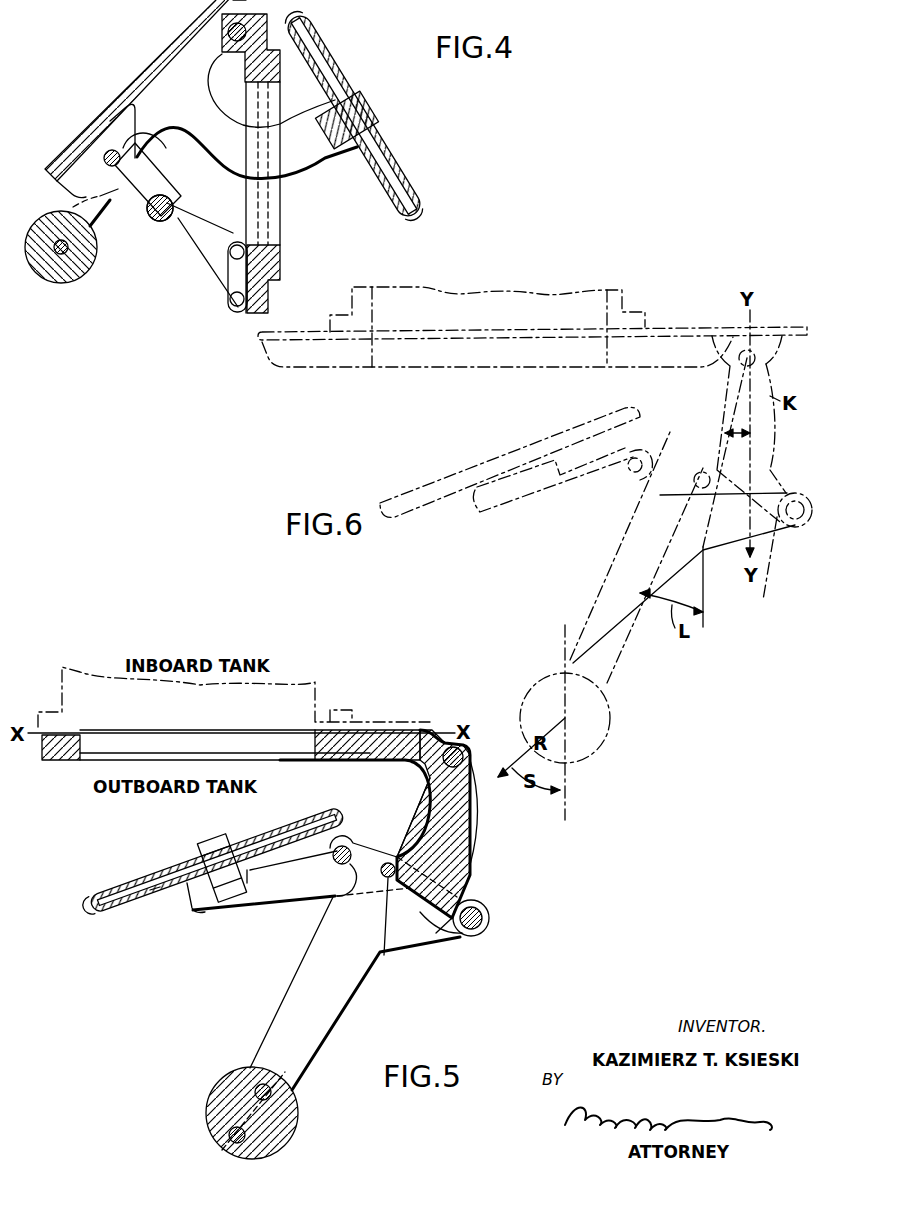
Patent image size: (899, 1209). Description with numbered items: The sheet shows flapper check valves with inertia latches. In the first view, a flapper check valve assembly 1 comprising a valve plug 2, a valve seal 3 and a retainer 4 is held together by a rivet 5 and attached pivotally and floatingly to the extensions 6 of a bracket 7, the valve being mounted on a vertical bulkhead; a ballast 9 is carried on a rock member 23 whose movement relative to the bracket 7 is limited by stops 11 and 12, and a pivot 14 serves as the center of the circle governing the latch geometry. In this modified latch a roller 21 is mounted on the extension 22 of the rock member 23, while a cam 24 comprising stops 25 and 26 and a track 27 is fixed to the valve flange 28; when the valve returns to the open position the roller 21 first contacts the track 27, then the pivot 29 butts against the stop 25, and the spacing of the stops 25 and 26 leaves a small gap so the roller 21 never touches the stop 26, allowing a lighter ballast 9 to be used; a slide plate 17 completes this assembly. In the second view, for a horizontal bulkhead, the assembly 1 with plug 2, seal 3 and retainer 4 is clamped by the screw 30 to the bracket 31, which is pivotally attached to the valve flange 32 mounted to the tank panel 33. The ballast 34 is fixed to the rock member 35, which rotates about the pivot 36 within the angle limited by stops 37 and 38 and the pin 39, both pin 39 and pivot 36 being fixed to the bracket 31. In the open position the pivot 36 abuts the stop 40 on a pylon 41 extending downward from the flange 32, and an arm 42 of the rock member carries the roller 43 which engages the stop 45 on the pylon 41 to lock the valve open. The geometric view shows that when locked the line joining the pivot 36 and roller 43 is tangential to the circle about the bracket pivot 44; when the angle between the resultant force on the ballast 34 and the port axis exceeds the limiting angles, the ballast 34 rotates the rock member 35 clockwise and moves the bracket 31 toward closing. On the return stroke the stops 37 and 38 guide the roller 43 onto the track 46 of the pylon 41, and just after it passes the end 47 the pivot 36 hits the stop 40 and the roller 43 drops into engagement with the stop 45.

In FIG. 4, the flapper check valve assembly 1 is at (402, 153).
In FIG. 6, the flapper check valve assembly 1 is at (450, 473).
In FIG. 5, the flapper check valve assembly 1 is at (168, 895).
In FIG. 4, the valve plug 2 is at (329, 67).
In FIG. 5, the valve plug 2 is at (136, 905).
In FIG. 4, the valve seal 3 is at (300, 20).
In FIG. 5, the valve seal 3 is at (93, 897).
In FIG. 4, the retainer 4 is at (382, 185).
In FIG. 5, the retainer 4 is at (153, 893).
In FIG. 4, the rivet 5 is at (367, 110).
In FIG. 4, the extensions 6 is at (310, 153).
In FIG. 4, the bracket 7 is at (172, 70).
In FIG. 4, the ballast 9 is at (62, 256).
In FIG. 4, the stop 11 is at (118, 100).
In FIG. 4, the stop 12 is at (71, 158).
In FIG. 4, the pivot 14 is at (230, 26).
In FIG. 4, the slide plate 17 is at (273, 222).
In FIG. 4, the roller 21 is at (160, 222).
In FIG. 4, the extension 22 is at (140, 210).
In FIG. 4, the rock member 23 is at (73, 207).
In FIG. 4, the cam 24 is at (210, 247).
In FIG. 4, the stop 25 is at (150, 140).
In FIG. 4, the stop 26 is at (163, 200).
In FIG. 4, the track 27 is at (128, 192).
In FIG. 4, the valve flange 28 is at (273, 268).
In FIG. 4, the pivot 29 is at (109, 152).
In FIG. 5, the screw 30 is at (220, 840).
In FIG. 6, the bracket 31 is at (567, 510).
In FIG. 5, the bracket 31 is at (283, 895).
In FIG. 6, the valve flange 32 is at (650, 348).
In FIG. 5, the valve flange 32 is at (390, 738).
In FIG. 6, the tank panel 33 is at (680, 325).
In FIG. 5, the tank panel 33 is at (420, 720).
In FIG. 6, the ballast 34 is at (585, 712).
In FIG. 5, the ballast 34 is at (250, 1108).
In FIG. 6, the rock member 35 is at (630, 643).
In FIG. 5, the rock member 35 is at (288, 1013).
In FIG. 6, the pivot 36 is at (702, 440).
In FIG. 5, the pivot 36 is at (380, 953).
In FIG. 6, the stop 37 is at (648, 455).
In FIG. 5, the stop 37 is at (348, 840).
In FIG. 5, the stop 38 is at (333, 897).
In FIG. 6, the pin 39 is at (620, 497).
In FIG. 5, the pin 39 is at (337, 850).
In FIG. 5, the stop 40 is at (389, 862).
In FIG. 6, the pylon 41 is at (744, 452).
In FIG. 5, the pylon 41 is at (460, 830).
In FIG. 5, the arm 42 is at (436, 933).
In FIG. 6, the roller 43 is at (795, 530).
In FIG. 5, the roller 43 is at (486, 915).
In FIG. 6, the pivot 44 is at (755, 352).
In FIG. 5, the pivot 44 is at (460, 752).
In FIG. 6, the stop 45 is at (790, 490).
In FIG. 5, the stop 45 is at (473, 898).
In FIG. 6, the track 46 is at (740, 517).
In FIG. 5, the track 46 is at (420, 912).
In FIG. 6, the end 47 is at (772, 553).
In FIG. 5, the end 47 is at (483, 937).